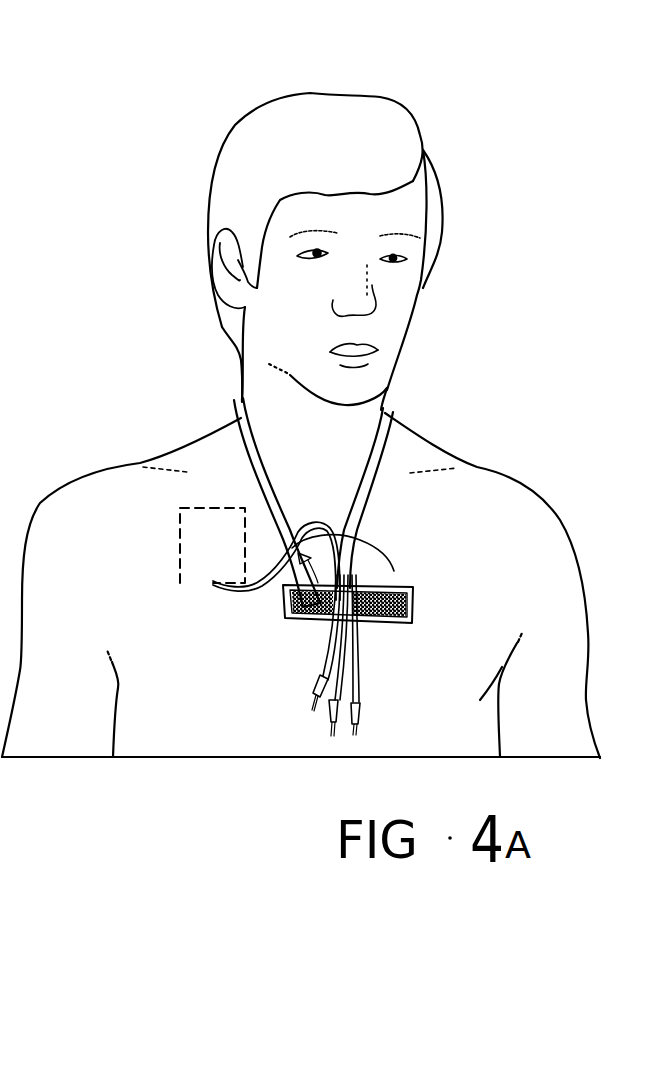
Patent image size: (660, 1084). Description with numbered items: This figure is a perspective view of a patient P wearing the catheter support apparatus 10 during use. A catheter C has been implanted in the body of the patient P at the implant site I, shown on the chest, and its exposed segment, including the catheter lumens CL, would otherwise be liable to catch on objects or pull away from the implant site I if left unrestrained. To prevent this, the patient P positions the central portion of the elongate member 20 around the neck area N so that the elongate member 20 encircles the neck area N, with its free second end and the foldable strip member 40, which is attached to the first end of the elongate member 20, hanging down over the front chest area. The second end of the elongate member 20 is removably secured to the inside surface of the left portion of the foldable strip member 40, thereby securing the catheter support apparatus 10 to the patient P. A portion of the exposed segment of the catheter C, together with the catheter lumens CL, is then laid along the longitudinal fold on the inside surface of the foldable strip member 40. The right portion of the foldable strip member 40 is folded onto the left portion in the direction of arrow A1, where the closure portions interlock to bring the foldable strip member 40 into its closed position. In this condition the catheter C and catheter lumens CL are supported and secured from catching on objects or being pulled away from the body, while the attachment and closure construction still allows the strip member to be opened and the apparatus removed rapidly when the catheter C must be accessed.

The patient P is at (443, 95).
The neck area N is at (225, 381).
The implant site I is at (200, 533).
The catheter support apparatus 10 is at (383, 469).
The elongate member 20 is at (399, 458).
The arrow A1 is at (376, 547).
The foldable strip member 40 is at (404, 573).
The catheter C is at (255, 584).
The catheter lumens CL is at (320, 680).